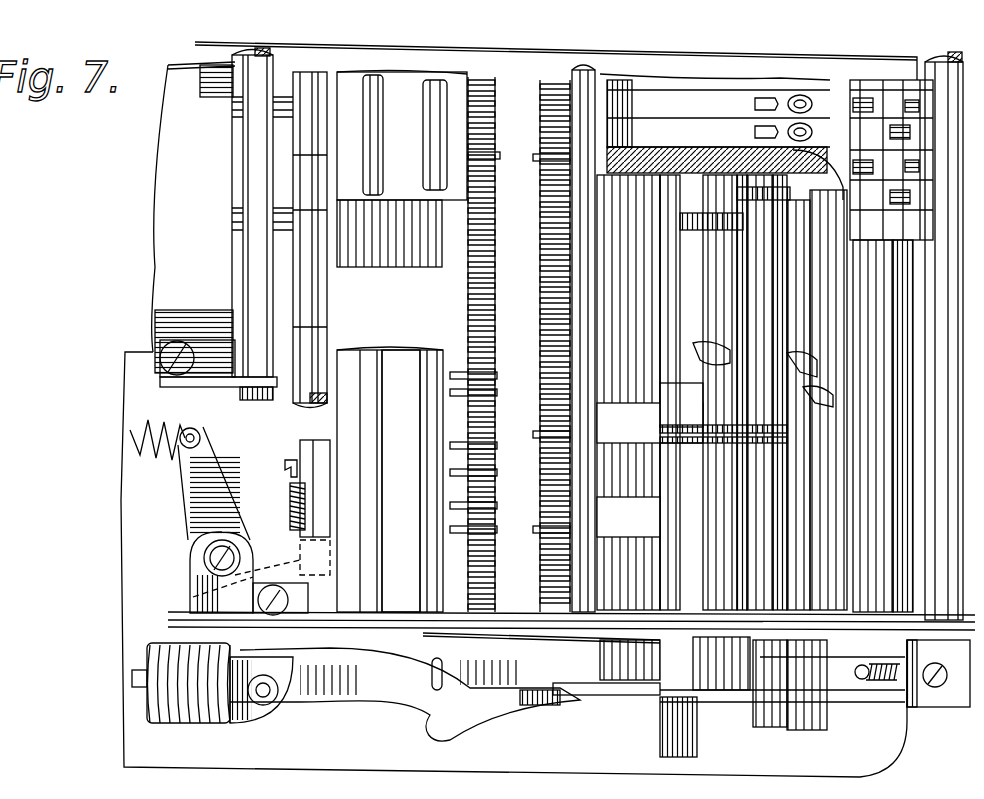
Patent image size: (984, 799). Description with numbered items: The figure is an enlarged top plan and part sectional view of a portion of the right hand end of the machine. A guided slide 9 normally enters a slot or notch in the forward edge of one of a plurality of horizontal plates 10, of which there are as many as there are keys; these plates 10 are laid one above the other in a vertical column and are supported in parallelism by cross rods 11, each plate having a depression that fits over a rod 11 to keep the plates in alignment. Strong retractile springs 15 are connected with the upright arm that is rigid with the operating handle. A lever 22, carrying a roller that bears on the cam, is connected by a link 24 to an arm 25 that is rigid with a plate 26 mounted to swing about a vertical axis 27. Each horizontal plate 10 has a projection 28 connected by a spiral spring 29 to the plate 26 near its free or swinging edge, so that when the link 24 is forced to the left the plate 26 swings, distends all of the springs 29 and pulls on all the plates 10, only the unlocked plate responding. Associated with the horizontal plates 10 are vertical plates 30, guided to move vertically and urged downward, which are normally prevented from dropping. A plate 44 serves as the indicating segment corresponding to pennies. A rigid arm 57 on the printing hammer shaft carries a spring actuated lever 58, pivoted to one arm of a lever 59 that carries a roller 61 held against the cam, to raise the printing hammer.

The guided slide 9 is at (333, 237).
The horizontal plates 10 is at (371, 479).
The cross rods 11 is at (430, 394).
The retractile springs 15 is at (187, 723).
The lever 22 is at (578, 692).
The link 24 is at (377, 707).
The arm 25 is at (261, 678).
The plate 26 is at (312, 576).
The vertical axis 27 is at (210, 558).
The projection 28 is at (287, 467).
The spiral spring 29 is at (290, 502).
The vertical plates 30 is at (487, 280).
The indicating segment 44 is at (556, 94).
The rigid arm 57 is at (790, 338).
The lever 58 is at (870, 700).
The lever 59 is at (763, 690).
The roller 61 is at (730, 727).